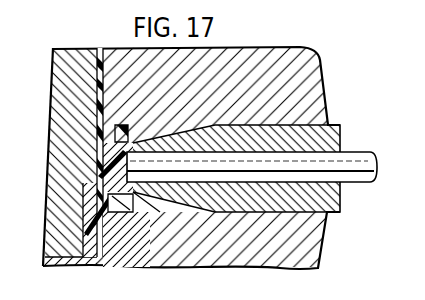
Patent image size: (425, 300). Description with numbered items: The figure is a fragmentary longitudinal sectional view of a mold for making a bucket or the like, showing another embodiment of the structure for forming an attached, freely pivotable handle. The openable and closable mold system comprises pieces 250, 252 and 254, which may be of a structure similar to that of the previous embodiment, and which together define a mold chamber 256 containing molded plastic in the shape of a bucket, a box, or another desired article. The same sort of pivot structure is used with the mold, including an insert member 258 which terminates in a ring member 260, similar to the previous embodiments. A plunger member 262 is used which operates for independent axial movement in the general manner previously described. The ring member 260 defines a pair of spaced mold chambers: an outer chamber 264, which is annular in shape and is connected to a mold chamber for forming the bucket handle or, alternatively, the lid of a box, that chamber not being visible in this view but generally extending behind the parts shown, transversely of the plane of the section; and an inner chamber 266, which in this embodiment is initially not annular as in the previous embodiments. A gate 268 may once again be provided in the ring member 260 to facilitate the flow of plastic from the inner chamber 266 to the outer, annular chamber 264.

The mold piece 250 is at (240, 94).
The mold piece 252 is at (252, 247).
The mold piece 254 is at (62, 50).
The mold chamber 256 is at (102, 57).
The insert member 258 is at (340, 133).
The ring member 260 is at (58, 137).
The plunger member 262 is at (372, 148).
The outer chamber 264 is at (116, 213).
The inner chamber 266 is at (97, 181).
The gate 268 is at (147, 203).